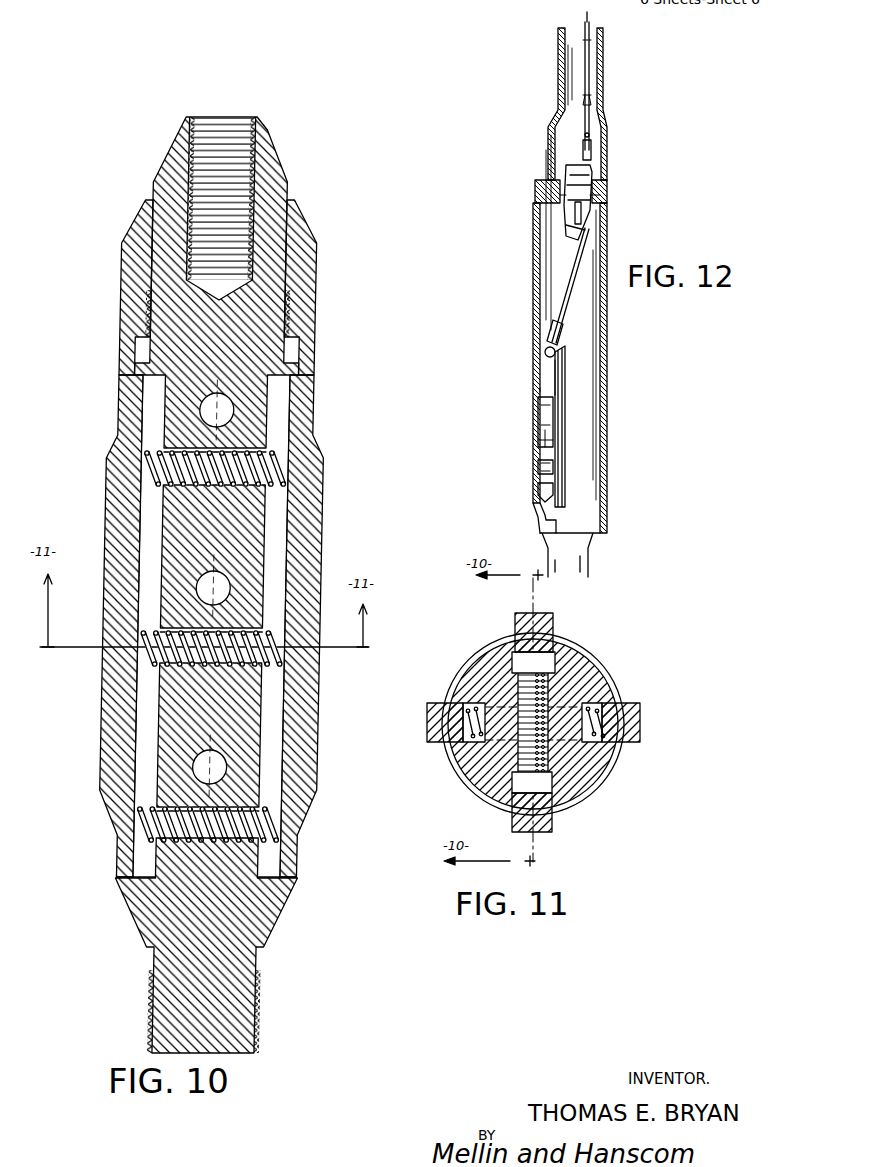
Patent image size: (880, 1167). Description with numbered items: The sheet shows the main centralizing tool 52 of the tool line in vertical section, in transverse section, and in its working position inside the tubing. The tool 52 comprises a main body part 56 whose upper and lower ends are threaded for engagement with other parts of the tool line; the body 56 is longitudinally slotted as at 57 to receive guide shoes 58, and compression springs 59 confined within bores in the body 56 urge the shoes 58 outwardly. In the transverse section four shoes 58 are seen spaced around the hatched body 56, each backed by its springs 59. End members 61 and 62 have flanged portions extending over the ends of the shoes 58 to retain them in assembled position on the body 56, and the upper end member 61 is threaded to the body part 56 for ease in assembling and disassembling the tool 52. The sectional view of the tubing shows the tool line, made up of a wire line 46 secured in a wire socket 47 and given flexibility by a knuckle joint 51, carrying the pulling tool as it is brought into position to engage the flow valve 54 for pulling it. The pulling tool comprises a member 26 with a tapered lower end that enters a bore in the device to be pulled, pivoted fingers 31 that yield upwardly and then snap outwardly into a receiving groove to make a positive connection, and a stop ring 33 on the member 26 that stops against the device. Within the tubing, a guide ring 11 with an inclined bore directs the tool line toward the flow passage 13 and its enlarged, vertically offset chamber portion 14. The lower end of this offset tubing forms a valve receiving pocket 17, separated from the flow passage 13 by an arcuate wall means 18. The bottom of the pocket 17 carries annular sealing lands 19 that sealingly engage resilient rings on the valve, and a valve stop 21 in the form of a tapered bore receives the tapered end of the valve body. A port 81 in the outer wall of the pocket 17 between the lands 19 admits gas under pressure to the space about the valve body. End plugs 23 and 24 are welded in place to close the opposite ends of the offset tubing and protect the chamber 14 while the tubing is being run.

In FIG. 12, the guide ring 11 is at (603, 197).
In FIG. 12, the flow passage 13 is at (585, 340).
In FIG. 12, the offset chamber portion 14 is at (545, 270).
In FIG. 12, the valve receiving pocket 17 is at (540, 388).
In FIG. 12, the arcuate wall means 18 is at (566, 384).
In FIG. 12, the annular sealing lands 19 is at (535, 455).
In FIG. 12, the valve stop 21 is at (538, 490).
In FIG. 12, the end plug 23 is at (537, 183).
In FIG. 12, the end plug 24 is at (536, 512).
In FIG. 12, the member 26 is at (548, 349).
In FIG. 12, the fingers 31 is at (545, 357).
In FIG. 12, the stop ring 33 is at (560, 343).
In FIG. 12, the wire line 46 is at (589, 24).
In FIG. 12, the wire socket 47 is at (590, 46).
In FIG. 12, the knuckle joint 51 is at (592, 150).
In FIG. 10, the main centralizing tool 52 is at (332, 385).
In FIG. 11, the main centralizing tool 52 is at (615, 646).
In FIG. 12, the flow valve 54 is at (601, 182).
In FIG. 10, the main body part 56 is at (288, 172).
In FIG. 11, the main body part 56 is at (585, 780).
In FIG. 10, the longitudinal slot 57 is at (279, 548).
In FIG. 10, the guide shoes 58 is at (314, 425).
In FIG. 12, the guide shoes 58 is at (590, 216).
In FIG. 11, the guide shoes 58 is at (553, 625).
In FIG. 10, the compression springs 59 is at (290, 472).
In FIG. 11, the compression springs 59 is at (548, 782).
In FIG. 10, the upper end member 61 is at (316, 302).
In FIG. 11, the upper end member 61 is at (605, 660).
In FIG. 10, the lower end member 62 is at (300, 898).
In FIG. 12, the port 81 is at (535, 468).